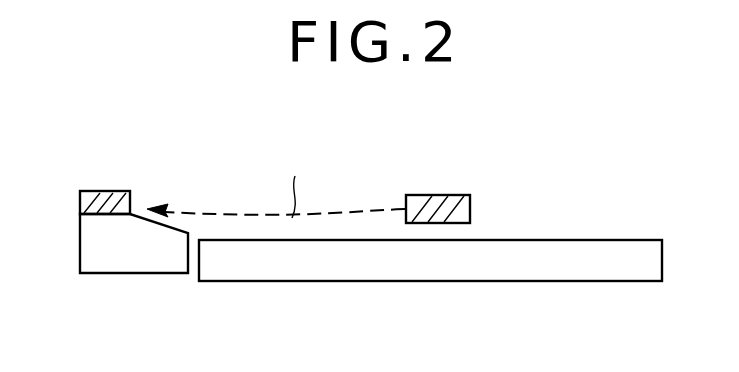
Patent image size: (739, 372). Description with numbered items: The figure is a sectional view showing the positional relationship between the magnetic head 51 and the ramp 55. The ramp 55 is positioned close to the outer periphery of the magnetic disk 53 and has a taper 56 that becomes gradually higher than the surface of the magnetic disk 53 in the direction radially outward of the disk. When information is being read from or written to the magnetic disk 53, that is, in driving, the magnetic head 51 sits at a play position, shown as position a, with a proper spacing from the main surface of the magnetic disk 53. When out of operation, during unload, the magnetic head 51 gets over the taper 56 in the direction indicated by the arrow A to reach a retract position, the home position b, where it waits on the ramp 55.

The magnetic head 51 is at (470, 208).
The magnetic disk 53 is at (427, 278).
The ramp 55 is at (115, 274).
The taper 56 is at (173, 228).